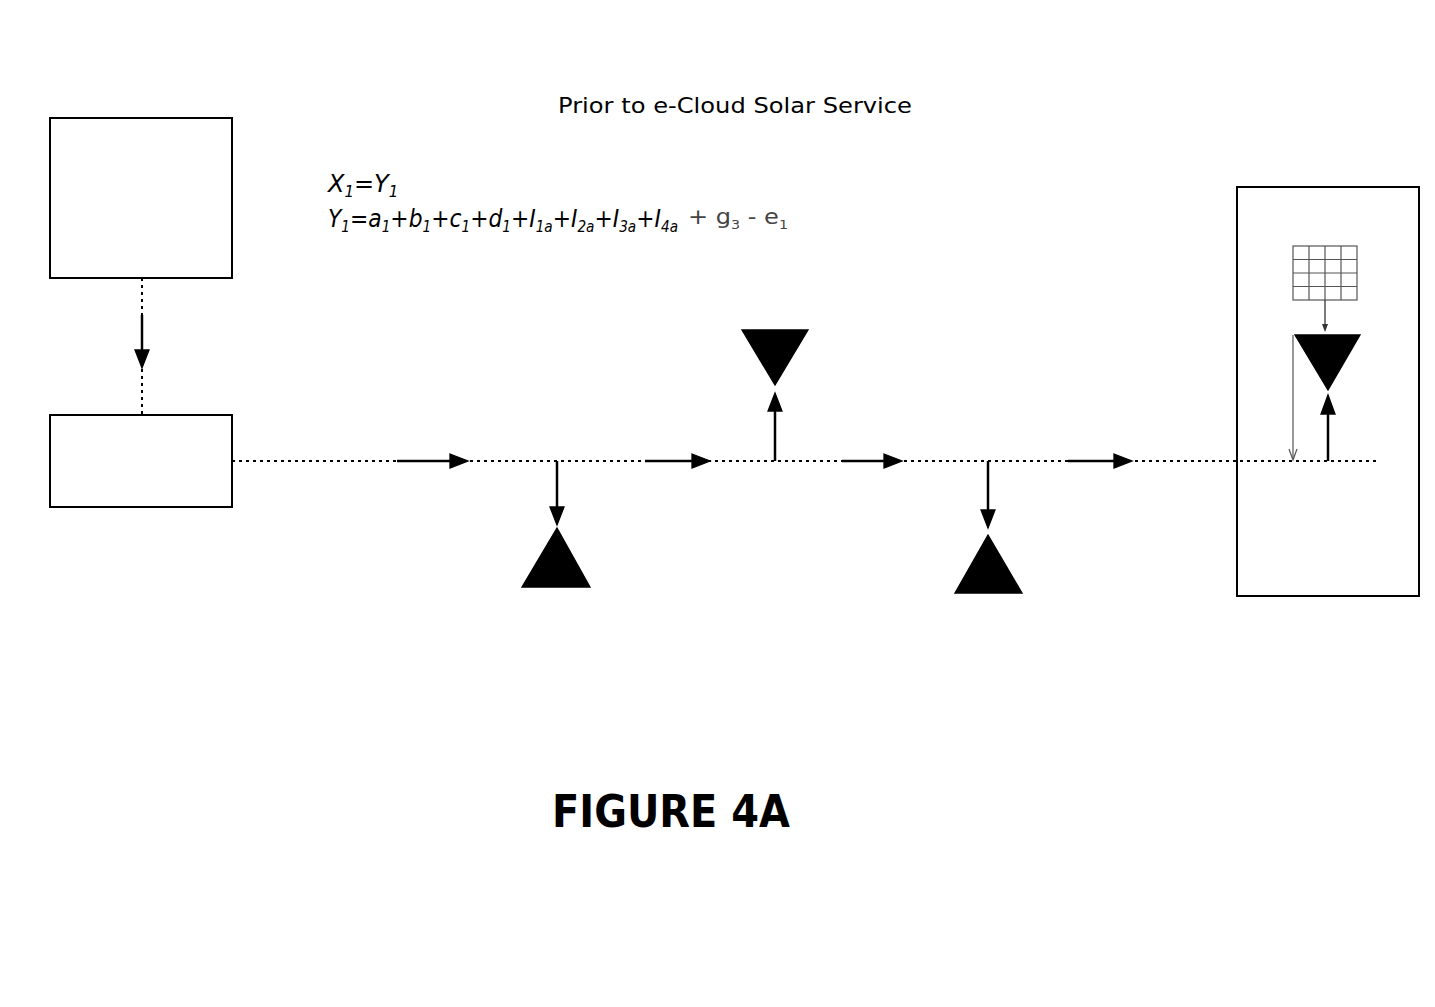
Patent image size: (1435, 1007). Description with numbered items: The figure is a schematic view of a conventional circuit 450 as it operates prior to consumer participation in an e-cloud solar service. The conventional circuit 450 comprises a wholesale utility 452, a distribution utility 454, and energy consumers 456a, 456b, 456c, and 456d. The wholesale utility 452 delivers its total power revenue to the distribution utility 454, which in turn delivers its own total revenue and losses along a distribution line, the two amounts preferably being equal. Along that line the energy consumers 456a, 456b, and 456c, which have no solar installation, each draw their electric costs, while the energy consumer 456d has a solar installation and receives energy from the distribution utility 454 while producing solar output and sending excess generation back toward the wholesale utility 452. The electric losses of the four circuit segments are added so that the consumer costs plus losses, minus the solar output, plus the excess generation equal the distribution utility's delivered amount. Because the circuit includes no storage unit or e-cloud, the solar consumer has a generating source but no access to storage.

The conventional circuit 450 is at (404, 578).
The wholesale utility 452 is at (132, 120).
The distribution utility 454 is at (125, 508).
The energy consumer 456a is at (555, 588).
The energy consumer 456b is at (777, 330).
The energy consumer 456c is at (990, 594).
The energy consumer 456d is at (1318, 333).